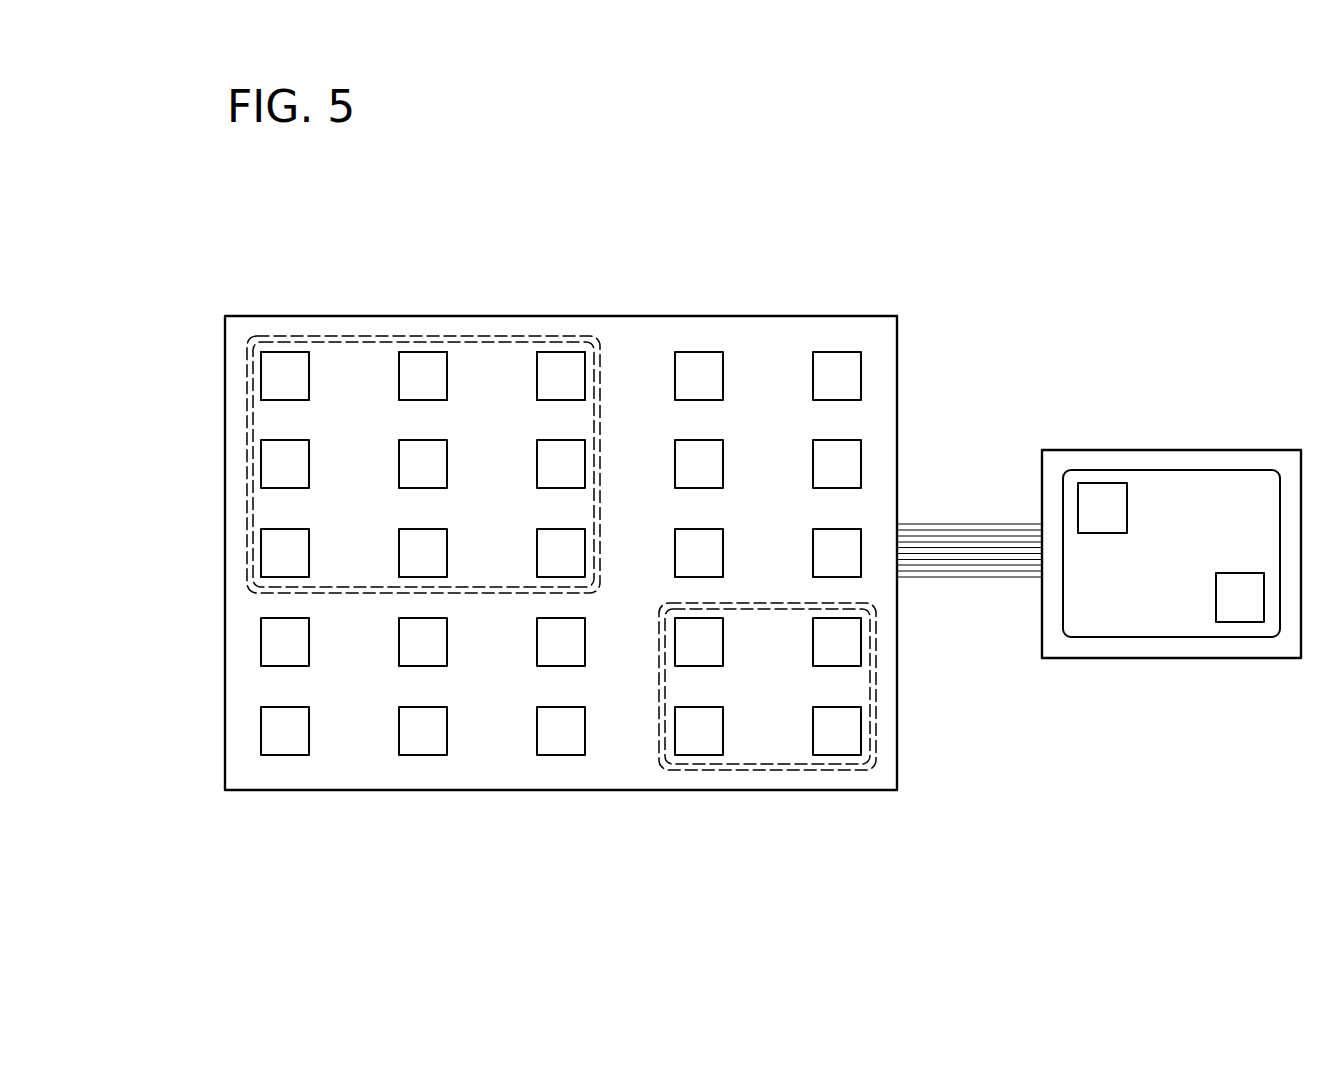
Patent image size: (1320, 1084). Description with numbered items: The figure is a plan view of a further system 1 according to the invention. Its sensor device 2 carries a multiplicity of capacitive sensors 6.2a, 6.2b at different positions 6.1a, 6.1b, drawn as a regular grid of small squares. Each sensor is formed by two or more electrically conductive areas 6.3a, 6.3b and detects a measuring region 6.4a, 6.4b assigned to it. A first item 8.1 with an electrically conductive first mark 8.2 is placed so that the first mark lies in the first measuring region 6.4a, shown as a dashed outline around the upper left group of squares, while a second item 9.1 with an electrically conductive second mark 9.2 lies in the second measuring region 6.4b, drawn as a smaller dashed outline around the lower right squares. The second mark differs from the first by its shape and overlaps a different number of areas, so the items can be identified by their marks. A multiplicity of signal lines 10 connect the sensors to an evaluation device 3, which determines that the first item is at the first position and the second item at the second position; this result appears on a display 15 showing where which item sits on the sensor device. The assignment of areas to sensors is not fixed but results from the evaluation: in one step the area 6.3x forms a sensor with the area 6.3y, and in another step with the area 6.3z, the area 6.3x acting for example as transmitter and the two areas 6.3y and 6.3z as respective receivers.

The sensor arrangement 1 is at (1097, 268).
The sensor device 2 is at (897, 342).
The evaluation device 3 is at (1092, 450).
The signal lines 10 is at (940, 524).
The display 15 is at (1210, 470).
The first item 8.1 is at (247, 405).
The first mark 8.2 is at (253, 430).
The second item 9.1 is at (868, 678).
The second mark 9.2 is at (877, 702).
The first position 6.1a is at (283, 557).
The capacitive sensor 6.2a is at (417, 555).
The electrically conductive area 6.3a is at (553, 558).
The first measuring region 6.4a is at (423, 376).
The second position 6.1b is at (702, 743).
The capacitive sensor 6.2b is at (713, 658).
The electrically conductive area 6.3b is at (830, 647).
The second measuring region 6.4b is at (827, 742).
The area 6.3x is at (700, 376).
The area 6.3y is at (842, 378).
The area 6.3z is at (710, 457).